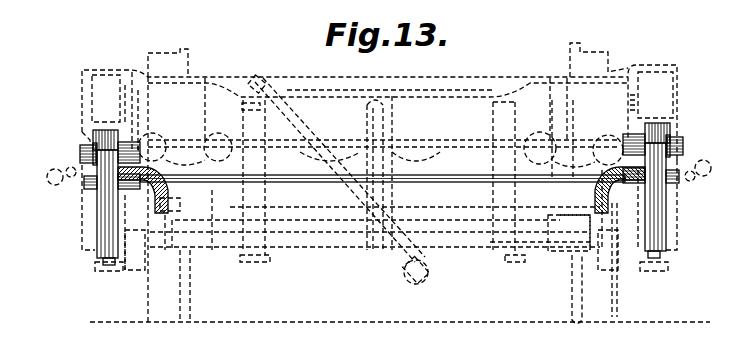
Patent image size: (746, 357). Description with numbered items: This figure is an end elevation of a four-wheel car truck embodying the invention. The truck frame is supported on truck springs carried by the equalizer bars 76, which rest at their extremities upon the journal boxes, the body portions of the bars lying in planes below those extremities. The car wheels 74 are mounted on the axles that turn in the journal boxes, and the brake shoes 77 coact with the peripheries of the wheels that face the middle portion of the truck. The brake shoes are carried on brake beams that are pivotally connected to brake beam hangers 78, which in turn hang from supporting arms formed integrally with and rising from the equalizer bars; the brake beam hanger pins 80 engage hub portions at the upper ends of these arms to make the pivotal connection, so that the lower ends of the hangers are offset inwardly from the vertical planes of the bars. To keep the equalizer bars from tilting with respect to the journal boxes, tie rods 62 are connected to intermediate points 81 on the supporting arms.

The tie rod 62 is at (352, 176).
The car wheel 74 is at (605, 288).
The equalizer bar 76 is at (100, 231).
The brake shoe 77 is at (165, 252).
The brake beam hanger 78 is at (152, 177).
The brake beam hanger pin 80 is at (79, 152).
The intermediate point 81 is at (85, 182).